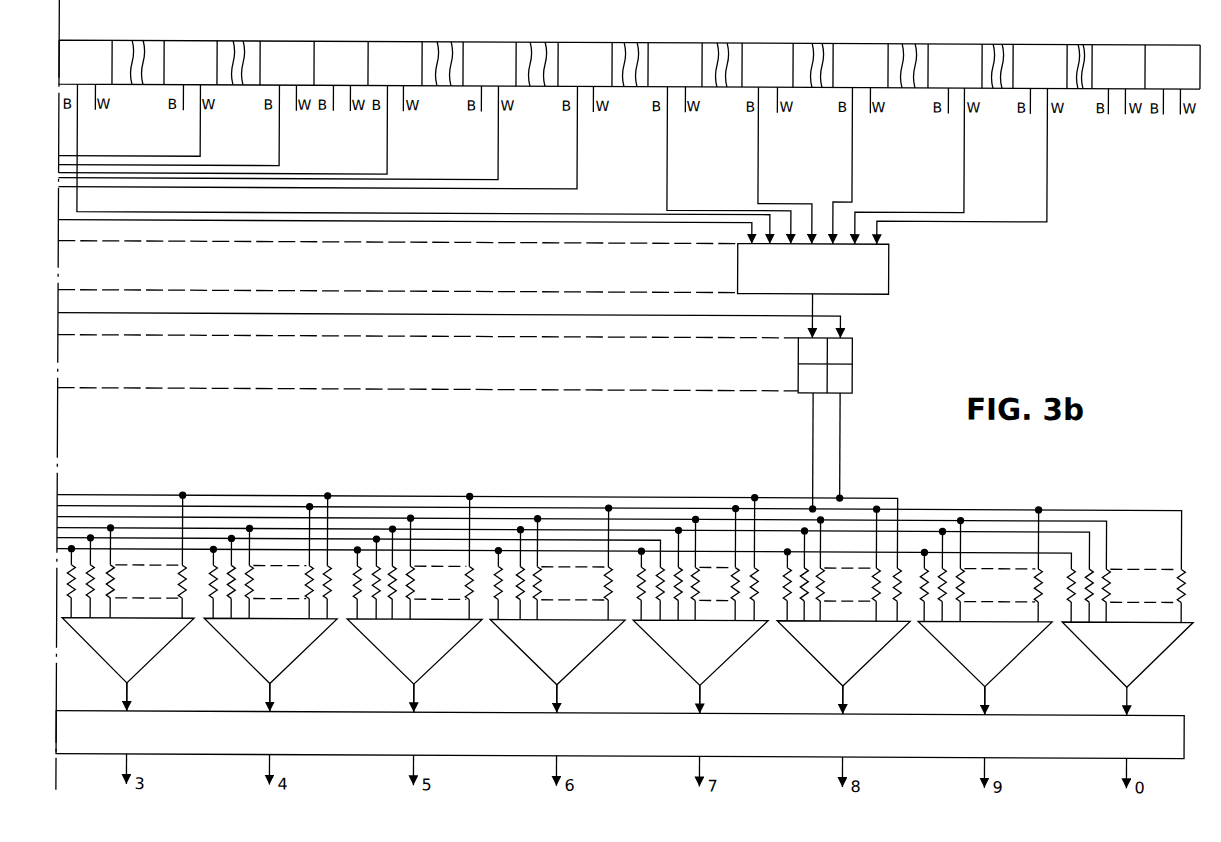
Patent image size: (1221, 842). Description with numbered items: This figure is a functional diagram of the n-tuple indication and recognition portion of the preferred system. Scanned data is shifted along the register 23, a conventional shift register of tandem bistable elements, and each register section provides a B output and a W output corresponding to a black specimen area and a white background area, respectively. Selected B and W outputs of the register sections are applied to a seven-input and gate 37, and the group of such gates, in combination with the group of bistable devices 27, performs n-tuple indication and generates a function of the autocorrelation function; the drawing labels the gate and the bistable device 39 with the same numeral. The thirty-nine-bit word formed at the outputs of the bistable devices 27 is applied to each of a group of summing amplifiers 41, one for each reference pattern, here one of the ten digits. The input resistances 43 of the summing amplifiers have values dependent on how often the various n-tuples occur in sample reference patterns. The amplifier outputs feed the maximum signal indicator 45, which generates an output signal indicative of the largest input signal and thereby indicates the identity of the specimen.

The register 23 is at (1068, 41).
The and gate 37 is at (888, 270).
The bistable device 39 is at (852, 378).
The bistable device 27 is at (808, 388).
The summing amplifier 41 is at (1159, 682).
The summing amplifier input resistance 43 is at (1180, 584).
The maximum signal indicator 45 is at (624, 713).